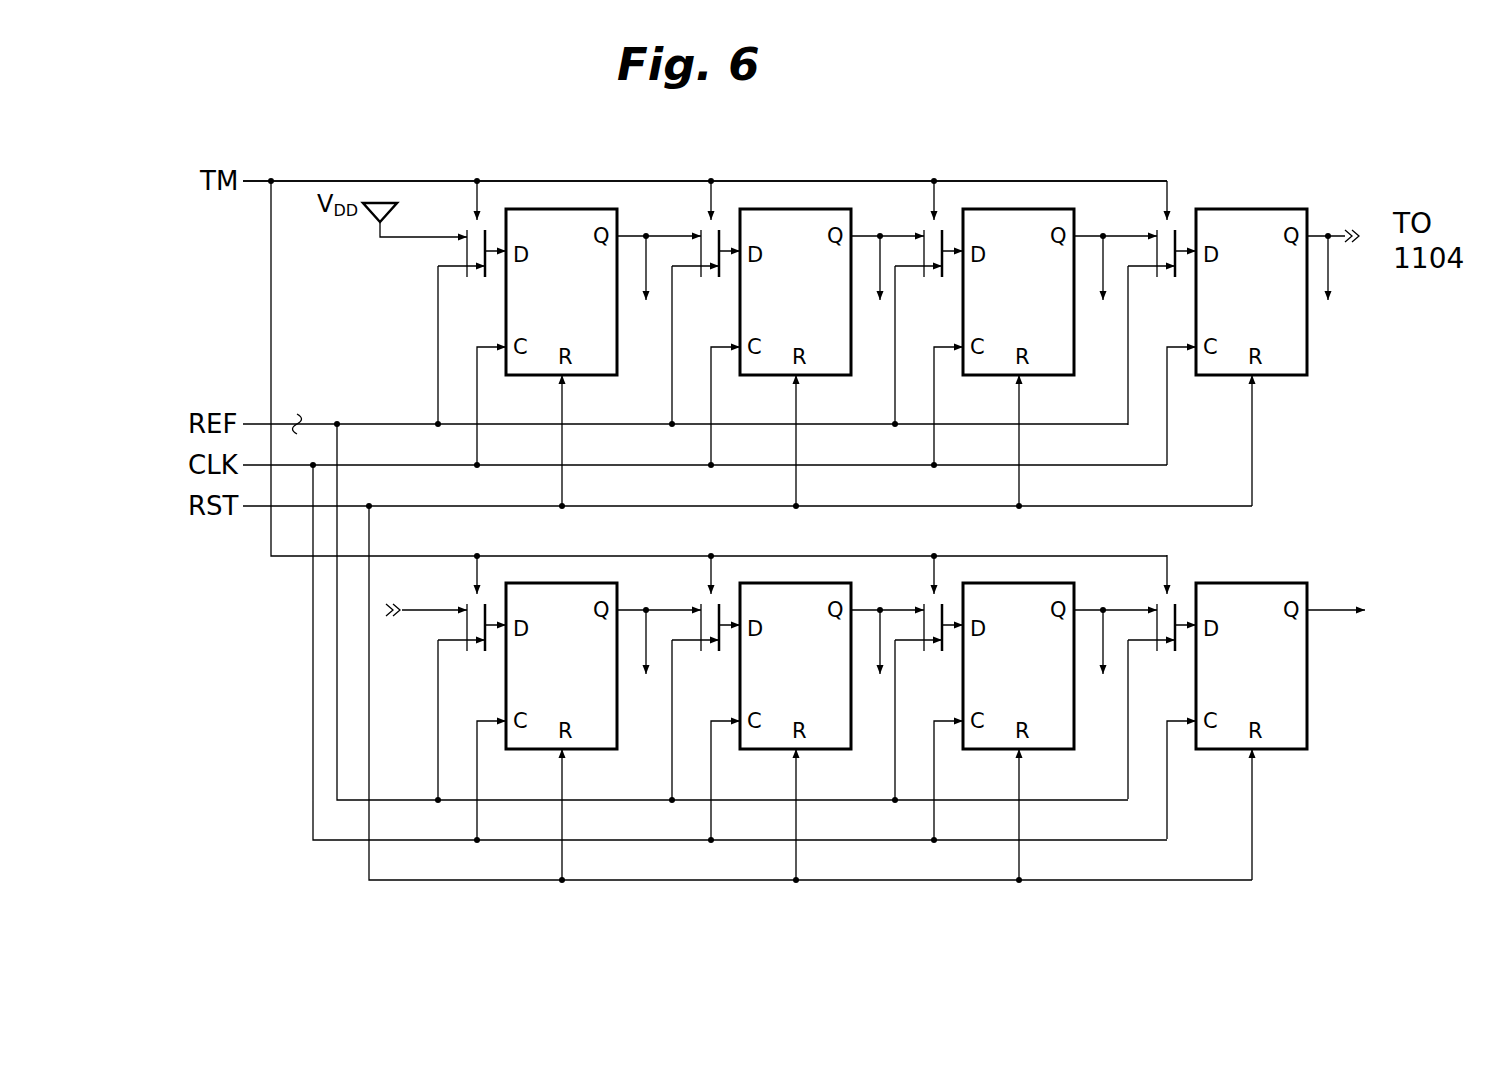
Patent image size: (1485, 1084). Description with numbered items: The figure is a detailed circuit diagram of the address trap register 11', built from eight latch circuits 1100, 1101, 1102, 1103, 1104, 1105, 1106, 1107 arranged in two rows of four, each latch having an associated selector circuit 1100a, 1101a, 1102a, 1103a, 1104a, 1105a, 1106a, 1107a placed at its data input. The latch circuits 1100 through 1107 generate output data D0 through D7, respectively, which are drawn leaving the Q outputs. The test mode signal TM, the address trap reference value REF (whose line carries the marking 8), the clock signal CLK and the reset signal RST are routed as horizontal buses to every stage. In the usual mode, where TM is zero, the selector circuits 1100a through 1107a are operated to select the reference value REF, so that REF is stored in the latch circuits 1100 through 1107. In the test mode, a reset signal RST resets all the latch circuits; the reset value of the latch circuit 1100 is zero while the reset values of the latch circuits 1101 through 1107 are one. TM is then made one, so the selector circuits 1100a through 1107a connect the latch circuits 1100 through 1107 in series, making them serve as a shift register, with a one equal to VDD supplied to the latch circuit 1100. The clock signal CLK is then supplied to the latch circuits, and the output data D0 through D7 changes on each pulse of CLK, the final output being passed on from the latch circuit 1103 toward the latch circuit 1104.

The address trap register 11' is at (705, 132).
The reference signal line 8 is at (301, 410).
The latch circuit 1100 is at (550, 209).
The latch circuit 1101 is at (792, 209).
The latch circuit 1102 is at (1015, 209).
The latch circuit 1103 is at (1240, 209).
The latch circuit 1104 is at (550, 583).
The latch circuit 1105 is at (793, 583).
The latch circuit 1106 is at (1015, 583).
The latch circuit 1107 is at (1240, 583).
The selector circuit 1100a is at (471, 227).
The selector circuit 1101a is at (705, 227).
The selector circuit 1102a is at (928, 227).
The selector circuit 1103a is at (1161, 227).
The selector circuit 1104a is at (471, 601).
The selector circuit 1105a is at (705, 601).
The selector circuit 1106a is at (928, 601).
The selector circuit 1107a is at (1161, 601).